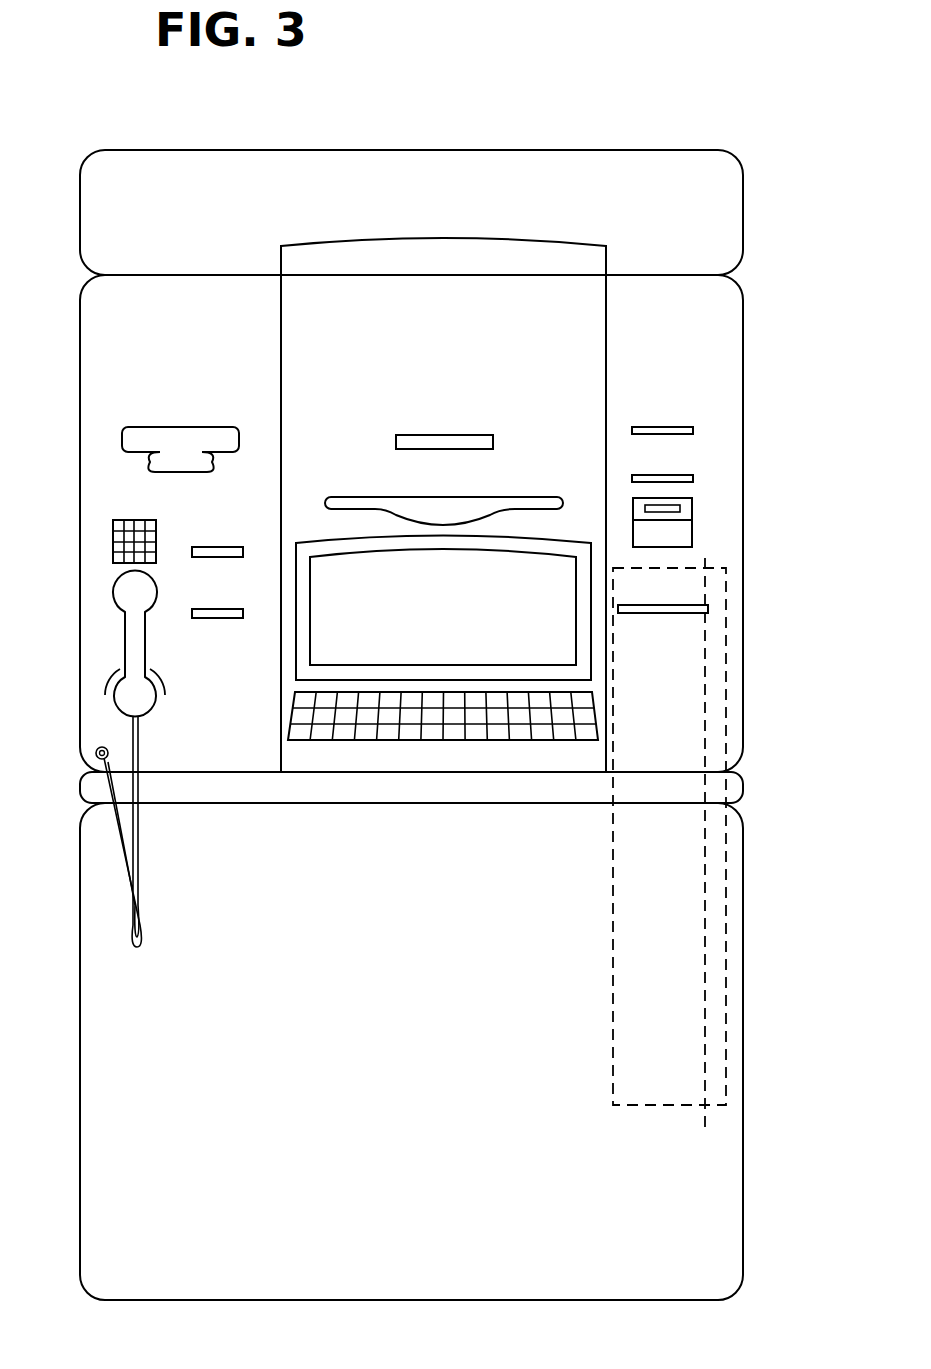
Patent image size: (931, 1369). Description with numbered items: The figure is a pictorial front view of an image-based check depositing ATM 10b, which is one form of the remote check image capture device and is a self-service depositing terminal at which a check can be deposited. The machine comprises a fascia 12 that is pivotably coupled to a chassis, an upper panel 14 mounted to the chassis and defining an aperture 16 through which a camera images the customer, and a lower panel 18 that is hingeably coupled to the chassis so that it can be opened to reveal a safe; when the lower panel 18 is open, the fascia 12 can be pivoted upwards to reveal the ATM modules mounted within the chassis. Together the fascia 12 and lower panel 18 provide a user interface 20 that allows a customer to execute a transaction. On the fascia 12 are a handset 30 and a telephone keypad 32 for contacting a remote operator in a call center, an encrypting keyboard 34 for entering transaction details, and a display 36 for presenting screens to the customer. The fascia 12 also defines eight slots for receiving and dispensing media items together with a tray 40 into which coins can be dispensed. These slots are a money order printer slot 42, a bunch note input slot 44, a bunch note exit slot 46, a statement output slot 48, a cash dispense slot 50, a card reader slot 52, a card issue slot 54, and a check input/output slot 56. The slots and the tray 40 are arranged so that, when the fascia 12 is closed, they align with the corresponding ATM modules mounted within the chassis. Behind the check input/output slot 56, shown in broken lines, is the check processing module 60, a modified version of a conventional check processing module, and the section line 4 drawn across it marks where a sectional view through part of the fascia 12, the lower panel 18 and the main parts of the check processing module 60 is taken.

The image-based check depositing ATM 10b is at (690, 67).
The fascia 12 is at (107, 331).
The upper panel 14 is at (718, 209).
The aperture 16 is at (452, 208).
The lower panel 18 is at (107, 1205).
The user interface 20 is at (209, 957).
The handset 30 is at (125, 644).
The telephone keypad 32 is at (113, 537).
The encrypting keyboard 34 is at (322, 711).
The display 36 is at (460, 616).
The tray 40 is at (692, 510).
The money order printer slot 42 is at (180, 434).
The bunch note input slot 44 is at (214, 546).
The bunch note exit slot 46 is at (213, 619).
The statement output slot 48 is at (462, 434).
The cash dispense slot 50 is at (443, 511).
The card reader slot 52 is at (681, 427).
The card issue slot 54 is at (693, 478).
The check input/output slot 56 is at (667, 613).
The check processing module 60 is at (726, 935).
The section line 4- 4 is at (708, 1132).